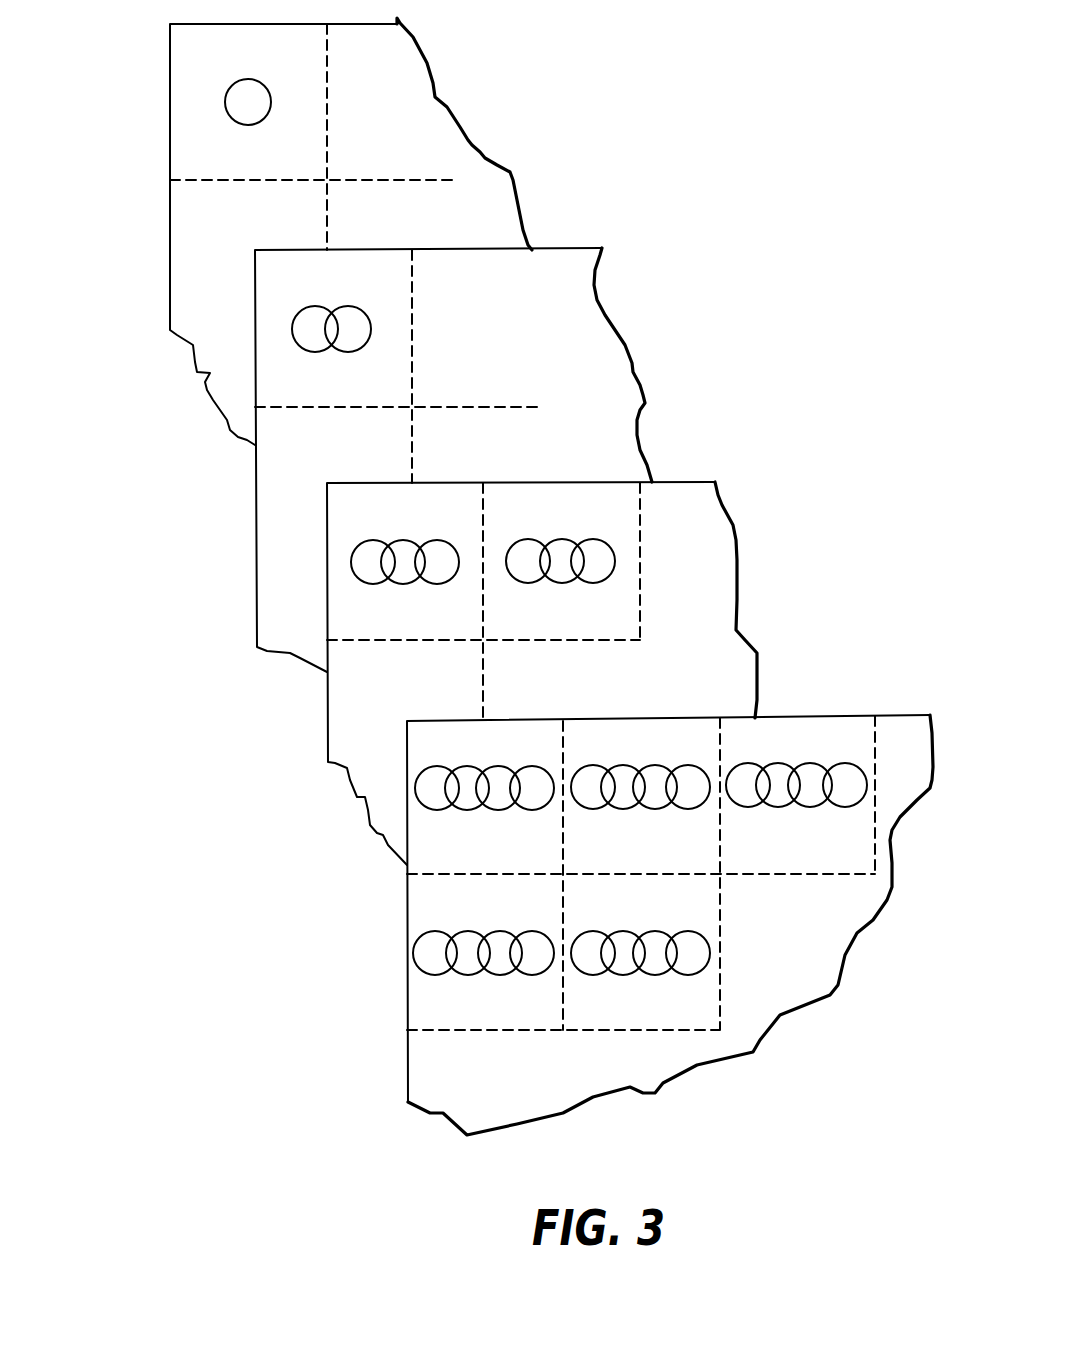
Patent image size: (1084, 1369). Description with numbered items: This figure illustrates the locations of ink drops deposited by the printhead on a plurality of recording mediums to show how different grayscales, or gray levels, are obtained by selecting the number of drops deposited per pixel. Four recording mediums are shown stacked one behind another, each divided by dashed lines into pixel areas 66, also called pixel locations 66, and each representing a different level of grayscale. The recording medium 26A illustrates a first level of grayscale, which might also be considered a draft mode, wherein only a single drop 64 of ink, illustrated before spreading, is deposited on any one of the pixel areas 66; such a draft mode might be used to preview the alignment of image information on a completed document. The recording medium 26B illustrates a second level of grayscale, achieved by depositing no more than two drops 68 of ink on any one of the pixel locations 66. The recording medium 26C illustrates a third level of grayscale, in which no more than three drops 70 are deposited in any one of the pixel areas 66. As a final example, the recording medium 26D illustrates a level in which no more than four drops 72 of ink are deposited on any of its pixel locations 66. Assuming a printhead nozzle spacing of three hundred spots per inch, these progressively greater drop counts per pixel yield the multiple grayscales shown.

The recording medium 26A is at (170, 288).
The recording medium 26B is at (257, 553).
The recording medium 26C is at (328, 730).
The recording medium 26D is at (408, 1062).
The single drop 64 is at (248, 100).
The pixel area 66 is at (313, 100).
The two drops 68 is at (317, 330).
The three drops 70 is at (373, 562).
The four drops 72 is at (438, 790).